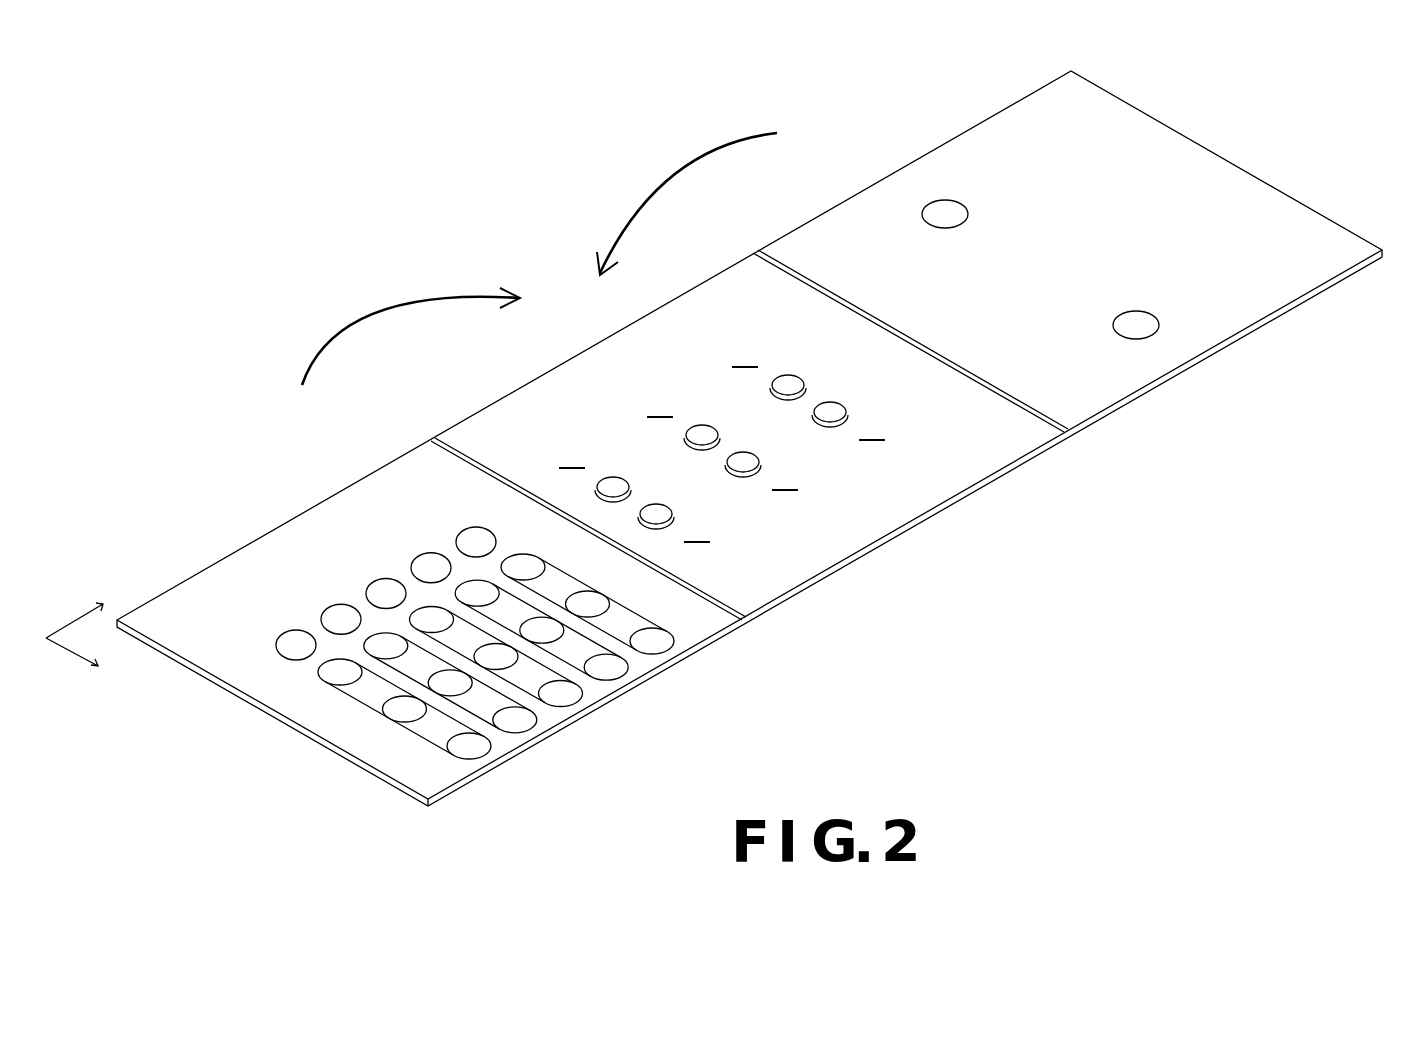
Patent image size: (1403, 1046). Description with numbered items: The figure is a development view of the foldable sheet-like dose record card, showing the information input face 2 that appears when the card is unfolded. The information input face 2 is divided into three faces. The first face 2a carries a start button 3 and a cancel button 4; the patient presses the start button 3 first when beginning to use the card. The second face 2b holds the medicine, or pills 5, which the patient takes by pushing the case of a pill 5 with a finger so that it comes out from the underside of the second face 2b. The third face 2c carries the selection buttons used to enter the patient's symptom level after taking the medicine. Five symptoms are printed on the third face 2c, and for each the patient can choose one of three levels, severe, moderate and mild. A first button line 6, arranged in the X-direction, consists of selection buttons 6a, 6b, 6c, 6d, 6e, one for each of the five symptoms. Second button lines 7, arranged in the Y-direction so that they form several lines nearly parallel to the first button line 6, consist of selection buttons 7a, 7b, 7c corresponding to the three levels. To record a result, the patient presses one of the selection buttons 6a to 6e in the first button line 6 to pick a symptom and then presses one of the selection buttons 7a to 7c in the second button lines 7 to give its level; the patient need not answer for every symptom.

The information input face 2 is at (1152, 492).
The first face 2a is at (1077, 408).
The second face 2b is at (918, 508).
The third face 2c is at (687, 642).
The start button 3 is at (945, 214).
The cancel button 4 is at (1136, 325).
The medicine (pills) 5 is at (771, 365).
The first button line 6 is at (118, 538).
The selection button 6a is at (443, 522).
The selection button 6b is at (393, 540).
The selection button 6c is at (347, 562).
The selection button 6d is at (300, 583).
The selection button 6e is at (292, 633).
The second button lines 7 is at (453, 704).
The selection button 7a is at (333, 673).
The selection button 7b is at (402, 710).
The selection button 7c is at (468, 748).